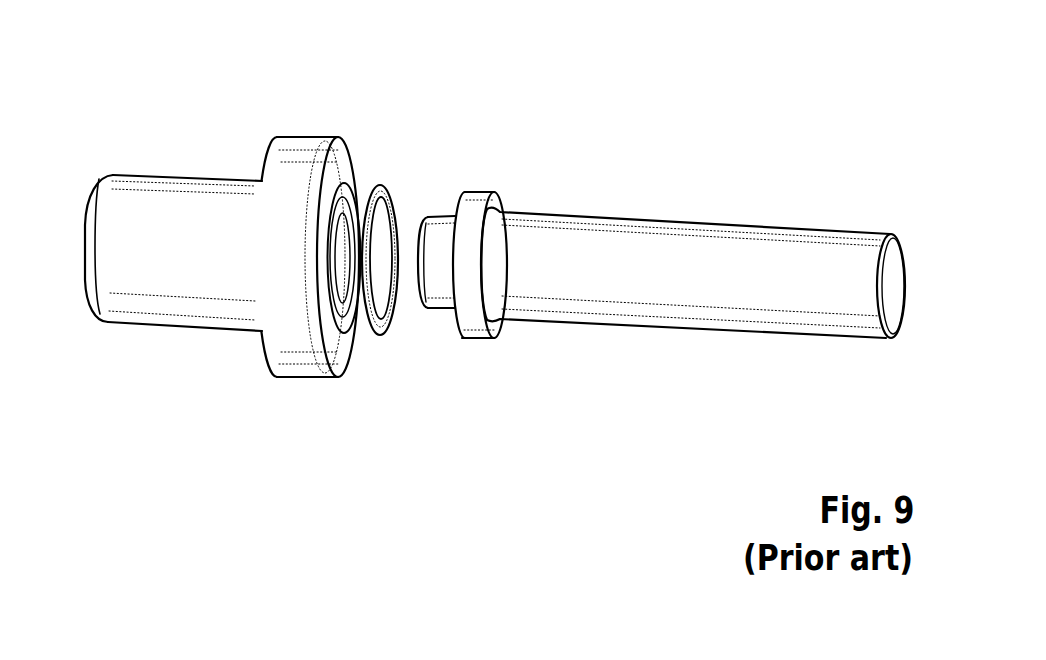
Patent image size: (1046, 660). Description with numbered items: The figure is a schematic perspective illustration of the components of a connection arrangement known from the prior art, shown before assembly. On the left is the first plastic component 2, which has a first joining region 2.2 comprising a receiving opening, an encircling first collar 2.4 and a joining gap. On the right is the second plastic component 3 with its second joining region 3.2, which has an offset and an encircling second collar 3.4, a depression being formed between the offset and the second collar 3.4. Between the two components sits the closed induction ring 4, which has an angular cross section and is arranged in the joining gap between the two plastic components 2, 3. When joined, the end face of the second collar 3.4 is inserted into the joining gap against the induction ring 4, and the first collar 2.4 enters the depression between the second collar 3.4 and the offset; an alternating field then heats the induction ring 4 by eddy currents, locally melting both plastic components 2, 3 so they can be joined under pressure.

The first plastic component 2 is at (266, 271).
The first joining region 2.2 is at (357, 346).
The first collar 2.4 is at (340, 212).
The second plastic component 3 is at (661, 199).
The second joining region 3.2 is at (500, 152).
The second collar 3.4 is at (460, 210).
The induction ring 4 is at (384, 312).